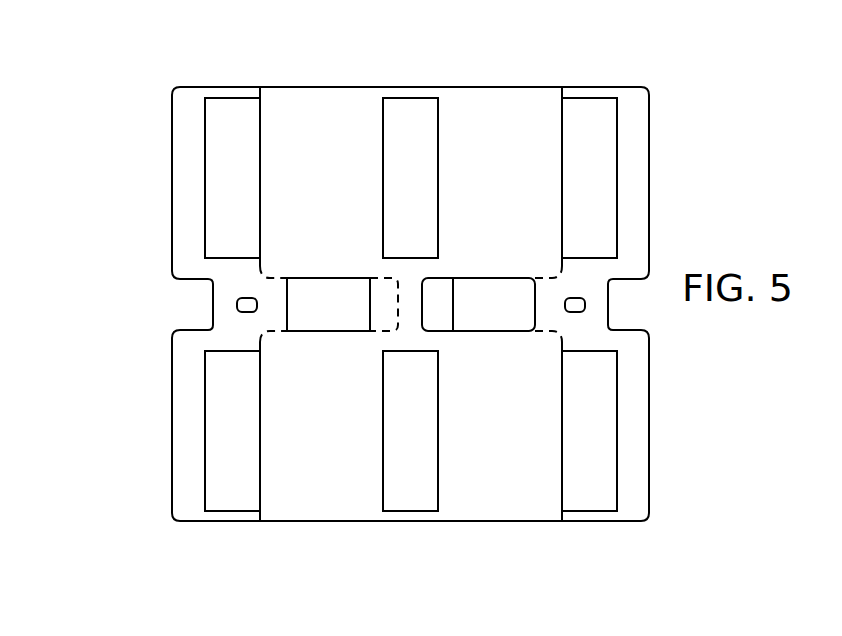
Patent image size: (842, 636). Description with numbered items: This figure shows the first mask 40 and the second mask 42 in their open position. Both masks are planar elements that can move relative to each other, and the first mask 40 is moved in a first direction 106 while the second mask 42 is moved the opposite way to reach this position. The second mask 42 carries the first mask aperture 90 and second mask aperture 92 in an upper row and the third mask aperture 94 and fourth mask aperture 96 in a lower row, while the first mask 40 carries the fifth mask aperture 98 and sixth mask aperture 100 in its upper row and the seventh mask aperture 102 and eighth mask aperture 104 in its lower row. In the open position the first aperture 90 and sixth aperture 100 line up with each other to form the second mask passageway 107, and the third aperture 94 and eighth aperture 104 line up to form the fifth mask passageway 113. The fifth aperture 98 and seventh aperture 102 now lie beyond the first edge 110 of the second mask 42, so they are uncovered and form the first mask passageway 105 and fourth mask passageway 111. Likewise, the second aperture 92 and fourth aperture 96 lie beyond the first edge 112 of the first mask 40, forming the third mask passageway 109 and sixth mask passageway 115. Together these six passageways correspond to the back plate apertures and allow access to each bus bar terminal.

The first mask 40 is at (172, 203).
The second mask 42 is at (653, 147).
The first mask aperture 90 is at (377, 133).
The sixth mask aperture 100 is at (377, 133).
The third mask aperture 94 is at (368, 477).
The eighth mask aperture 104 is at (368, 477).
The second mask aperture 92 is at (652, 159).
The fourth mask aperture 96 is at (655, 463).
The fifth mask aperture 98 is at (154, 210).
The seventh mask aperture 102 is at (162, 431).
The first mask passageway 105 is at (218, 245).
The first direction 106 is at (260, 490).
The second mask passageway 107 is at (398, 247).
The third mask passageway 109 is at (602, 233).
The first edge of the second mask 110 is at (260, 117).
The fourth mask passageway 111 is at (223, 377).
The first edge of the first mask 112 is at (562, 118).
The fifth mask passageway 113 is at (395, 378).
The sixth mask passageway 115 is at (602, 372).